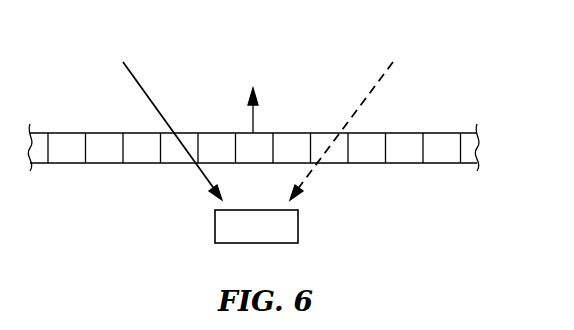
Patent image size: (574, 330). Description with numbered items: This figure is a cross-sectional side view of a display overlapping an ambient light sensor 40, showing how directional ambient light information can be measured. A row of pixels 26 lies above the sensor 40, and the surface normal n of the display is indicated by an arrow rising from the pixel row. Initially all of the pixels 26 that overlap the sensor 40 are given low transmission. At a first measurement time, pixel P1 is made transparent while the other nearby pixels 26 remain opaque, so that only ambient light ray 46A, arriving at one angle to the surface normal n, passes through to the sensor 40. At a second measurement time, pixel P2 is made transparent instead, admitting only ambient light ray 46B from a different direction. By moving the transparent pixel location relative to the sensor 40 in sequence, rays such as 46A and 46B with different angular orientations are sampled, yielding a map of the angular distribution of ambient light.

The pixels 26 is at (66, 140).
The sensor 40 is at (298, 222).
The ambient light ray 46A is at (380, 75).
The ambient light ray 46B is at (140, 70).
The pixel P1 is at (320, 133).
The pixel P2 is at (186, 133).
The surface normal n is at (253, 101).